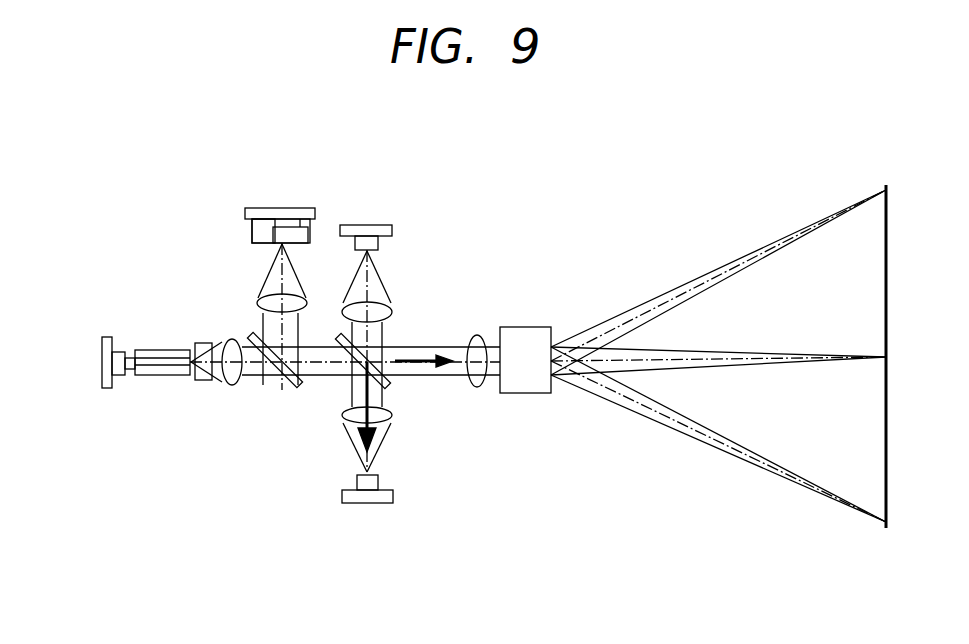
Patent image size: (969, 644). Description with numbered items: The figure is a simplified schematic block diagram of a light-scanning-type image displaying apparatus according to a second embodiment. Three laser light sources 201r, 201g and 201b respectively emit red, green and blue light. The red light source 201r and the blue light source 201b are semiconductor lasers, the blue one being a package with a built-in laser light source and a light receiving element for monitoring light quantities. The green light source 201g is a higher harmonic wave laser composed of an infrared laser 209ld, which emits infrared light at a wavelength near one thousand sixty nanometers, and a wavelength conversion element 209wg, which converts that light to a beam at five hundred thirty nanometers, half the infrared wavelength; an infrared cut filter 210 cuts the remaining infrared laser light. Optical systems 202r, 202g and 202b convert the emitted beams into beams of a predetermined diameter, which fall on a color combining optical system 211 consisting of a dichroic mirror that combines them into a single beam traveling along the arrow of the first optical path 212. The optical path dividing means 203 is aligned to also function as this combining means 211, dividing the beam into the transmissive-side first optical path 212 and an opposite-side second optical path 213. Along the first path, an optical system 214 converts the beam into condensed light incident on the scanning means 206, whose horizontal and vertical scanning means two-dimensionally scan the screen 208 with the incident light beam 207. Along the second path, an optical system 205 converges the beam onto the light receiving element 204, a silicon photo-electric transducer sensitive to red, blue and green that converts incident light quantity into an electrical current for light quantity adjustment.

The light source 201g is at (118, 252).
The light source 201b is at (262, 208).
The light source 201r is at (381, 245).
The optical system 202g is at (226, 340).
The optical system 202b is at (260, 304).
The optical system 202r is at (390, 310).
The optical path dividing means 203 is at (384, 352).
The light receiving element 204 is at (393, 494).
The optical system 205 is at (388, 417).
The scanning means 206 is at (526, 327).
The incident light beam 207 is at (702, 285).
The screen 208 is at (887, 495).
The infrared laser 209ld is at (118, 372).
The wavelength conversion element 209wg is at (148, 350).
The infrared cut filter 210 is at (204, 381).
The color combining optical system 211 is at (300, 388).
The first optical path 212 is at (428, 368).
The second optical path 213 is at (355, 452).
The optical system 214 is at (482, 388).